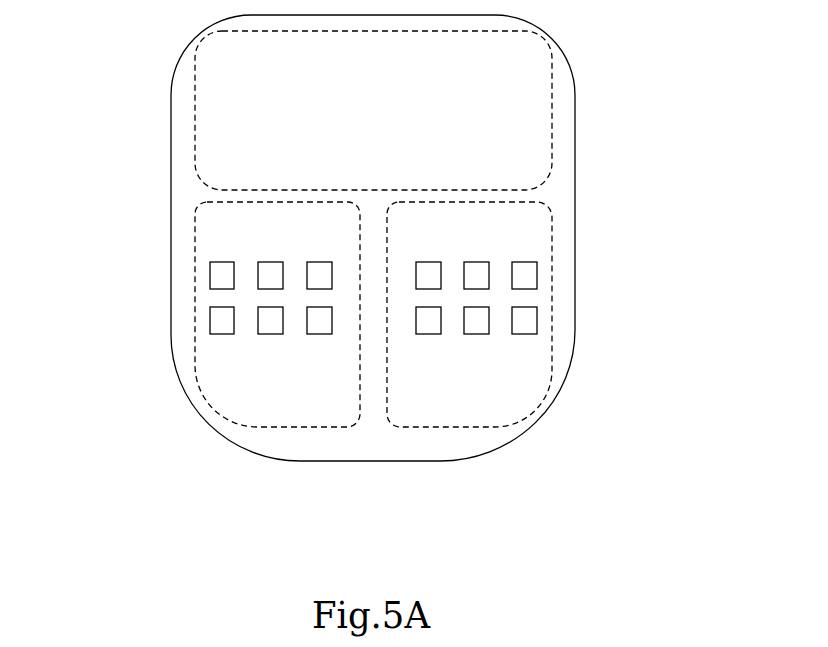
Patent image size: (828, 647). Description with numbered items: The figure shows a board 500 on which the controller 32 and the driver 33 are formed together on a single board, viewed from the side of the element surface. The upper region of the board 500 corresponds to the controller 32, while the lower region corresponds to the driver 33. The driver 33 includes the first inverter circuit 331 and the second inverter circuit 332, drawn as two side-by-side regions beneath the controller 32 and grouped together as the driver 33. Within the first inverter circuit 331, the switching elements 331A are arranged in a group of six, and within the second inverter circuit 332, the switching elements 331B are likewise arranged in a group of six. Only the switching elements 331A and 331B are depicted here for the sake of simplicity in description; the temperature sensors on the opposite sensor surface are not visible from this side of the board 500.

The board 500 is at (550, 45).
The controller 32 is at (553, 110).
The driver 33 is at (373, 391).
The first inverter circuit 331 is at (324, 427).
The second inverter circuit 332 is at (419, 427).
The switching elements 331A is at (313, 308).
The switching elements 331B is at (428, 288).